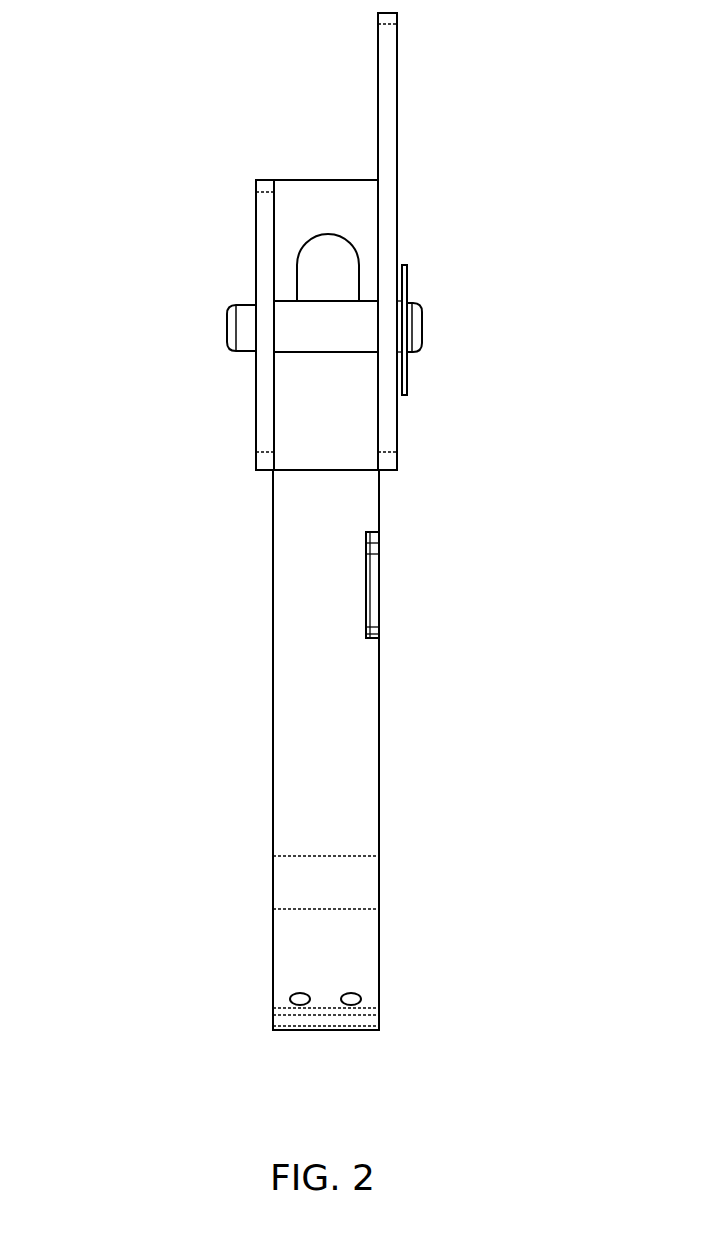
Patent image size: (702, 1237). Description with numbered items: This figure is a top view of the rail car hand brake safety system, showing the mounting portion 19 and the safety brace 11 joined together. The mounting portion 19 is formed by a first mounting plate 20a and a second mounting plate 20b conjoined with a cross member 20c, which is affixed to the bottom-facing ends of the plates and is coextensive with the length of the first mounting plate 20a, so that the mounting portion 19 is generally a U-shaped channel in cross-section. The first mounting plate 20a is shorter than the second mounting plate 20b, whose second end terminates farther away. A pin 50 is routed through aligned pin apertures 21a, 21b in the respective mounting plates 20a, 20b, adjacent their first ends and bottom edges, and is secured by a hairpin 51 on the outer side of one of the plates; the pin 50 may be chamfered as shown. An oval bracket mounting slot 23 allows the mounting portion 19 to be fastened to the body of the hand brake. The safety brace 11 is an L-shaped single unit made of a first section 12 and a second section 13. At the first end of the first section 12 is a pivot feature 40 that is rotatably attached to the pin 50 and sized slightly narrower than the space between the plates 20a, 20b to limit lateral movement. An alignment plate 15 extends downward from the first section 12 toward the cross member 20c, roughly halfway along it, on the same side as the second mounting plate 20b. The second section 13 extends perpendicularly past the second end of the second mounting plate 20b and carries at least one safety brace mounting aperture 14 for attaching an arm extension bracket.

The safety brace 11 is at (212, 660).
The first section 12 is at (290, 770).
The second section 13 is at (379, 935).
The safety brace mounting aperture 14 is at (290, 993).
The alignment plate 15 is at (373, 582).
The mounting portion 19 is at (186, 352).
The first mounting plate 20a is at (256, 422).
The second mounting plate 20b is at (397, 103).
The cross member 20c is at (328, 212).
The pin aperture 21a is at (277, 304).
The pin aperture 21b is at (373, 350).
The bracket mounting slot 23 is at (332, 258).
The pivot feature 40 is at (307, 332).
The pin 50 is at (420, 332).
The hairpin 51 is at (407, 282).